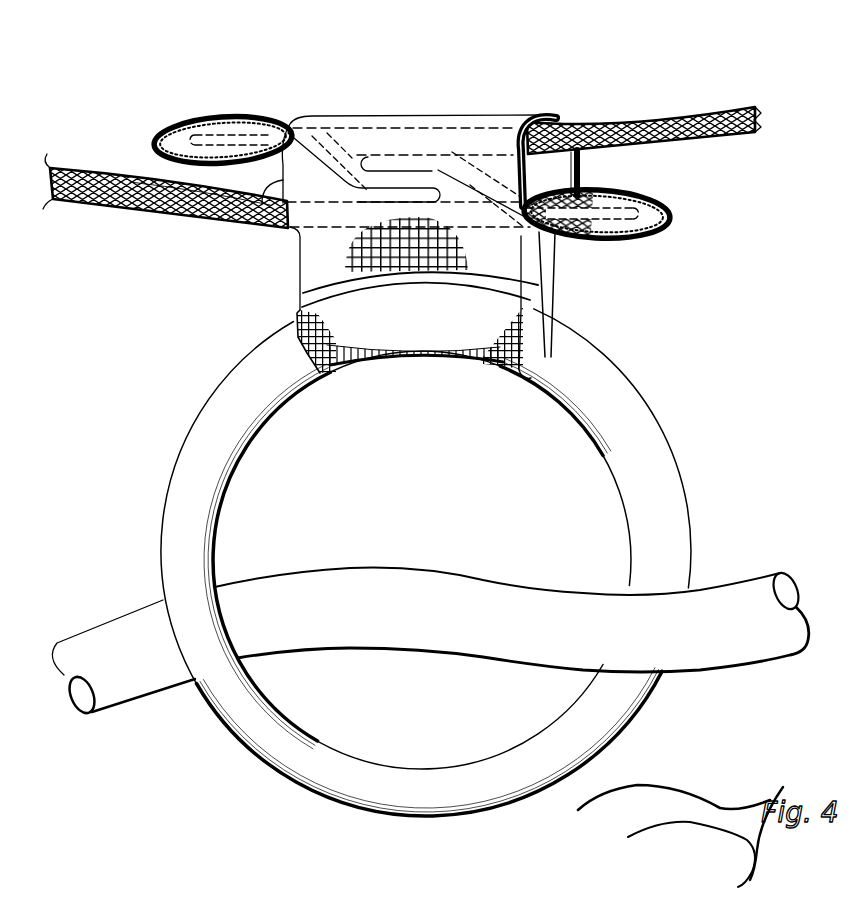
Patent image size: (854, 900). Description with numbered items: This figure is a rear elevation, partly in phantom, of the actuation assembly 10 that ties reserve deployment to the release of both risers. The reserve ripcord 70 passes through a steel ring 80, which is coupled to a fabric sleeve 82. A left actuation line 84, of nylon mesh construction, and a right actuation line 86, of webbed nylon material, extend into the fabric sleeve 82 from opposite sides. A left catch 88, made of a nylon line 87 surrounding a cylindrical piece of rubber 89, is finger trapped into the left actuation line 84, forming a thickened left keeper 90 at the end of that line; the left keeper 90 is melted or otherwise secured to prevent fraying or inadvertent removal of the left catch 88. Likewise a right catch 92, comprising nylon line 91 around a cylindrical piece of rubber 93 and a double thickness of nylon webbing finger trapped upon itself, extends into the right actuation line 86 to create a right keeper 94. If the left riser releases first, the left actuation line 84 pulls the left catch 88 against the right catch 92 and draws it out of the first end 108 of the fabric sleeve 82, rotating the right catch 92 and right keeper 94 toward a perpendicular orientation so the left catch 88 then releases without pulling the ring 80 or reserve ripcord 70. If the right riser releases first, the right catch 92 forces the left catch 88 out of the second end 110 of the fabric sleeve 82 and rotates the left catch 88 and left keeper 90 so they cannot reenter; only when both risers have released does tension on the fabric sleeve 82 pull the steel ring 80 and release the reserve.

The attachment device 10 is at (262, 62).
The reserve ripcord 70 is at (707, 613).
The third steel ring 80 is at (247, 382).
The fabric sleeve 82 is at (498, 113).
The left actuation line 84 is at (160, 222).
The right actuation line 86 is at (662, 116).
The nylon line 87 is at (323, 142).
The left catch 88 is at (392, 148).
The cylindrical piece of rubber 89 is at (296, 118).
The left keeper 90 is at (593, 224).
The nylon line 91 is at (465, 150).
The right catch 92 is at (437, 150).
The cylindrical piece of rubber 93 is at (486, 150).
The right keeper 94 is at (220, 140).
The first end 108 is at (258, 228).
The second end 110 is at (565, 176).